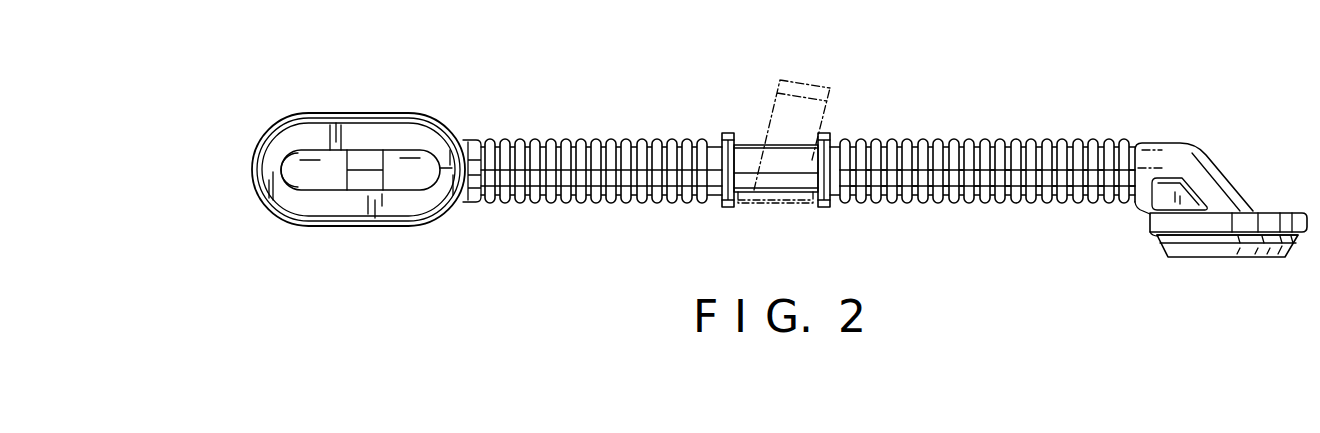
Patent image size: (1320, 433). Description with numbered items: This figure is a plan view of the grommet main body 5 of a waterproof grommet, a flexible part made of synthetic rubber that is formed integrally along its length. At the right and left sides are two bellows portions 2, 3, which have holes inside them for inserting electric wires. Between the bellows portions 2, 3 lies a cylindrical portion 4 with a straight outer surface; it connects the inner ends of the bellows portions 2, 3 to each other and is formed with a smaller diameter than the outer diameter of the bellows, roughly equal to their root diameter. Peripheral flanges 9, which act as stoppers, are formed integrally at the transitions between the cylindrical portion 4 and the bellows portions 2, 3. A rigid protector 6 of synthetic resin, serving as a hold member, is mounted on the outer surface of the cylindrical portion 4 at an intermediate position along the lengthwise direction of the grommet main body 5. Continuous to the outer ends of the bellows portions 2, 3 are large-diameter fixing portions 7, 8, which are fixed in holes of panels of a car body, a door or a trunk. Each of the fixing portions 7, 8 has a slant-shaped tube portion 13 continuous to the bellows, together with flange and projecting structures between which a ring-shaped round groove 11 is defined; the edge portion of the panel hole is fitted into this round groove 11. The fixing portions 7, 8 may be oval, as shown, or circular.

The bellows portion 2 is at (601, 201).
The bellows portion 3 is at (986, 204).
The cylindrical portion 4 is at (746, 155).
The grommet main body 5 is at (949, 130).
The protector 6 is at (826, 82).
The fixing portion 7 is at (401, 227).
The fixing portion 8 is at (1155, 259).
The peripheral flange 9 is at (728, 208).
The round groove 11 is at (1156, 235).
The tube portion 13 is at (1235, 189).